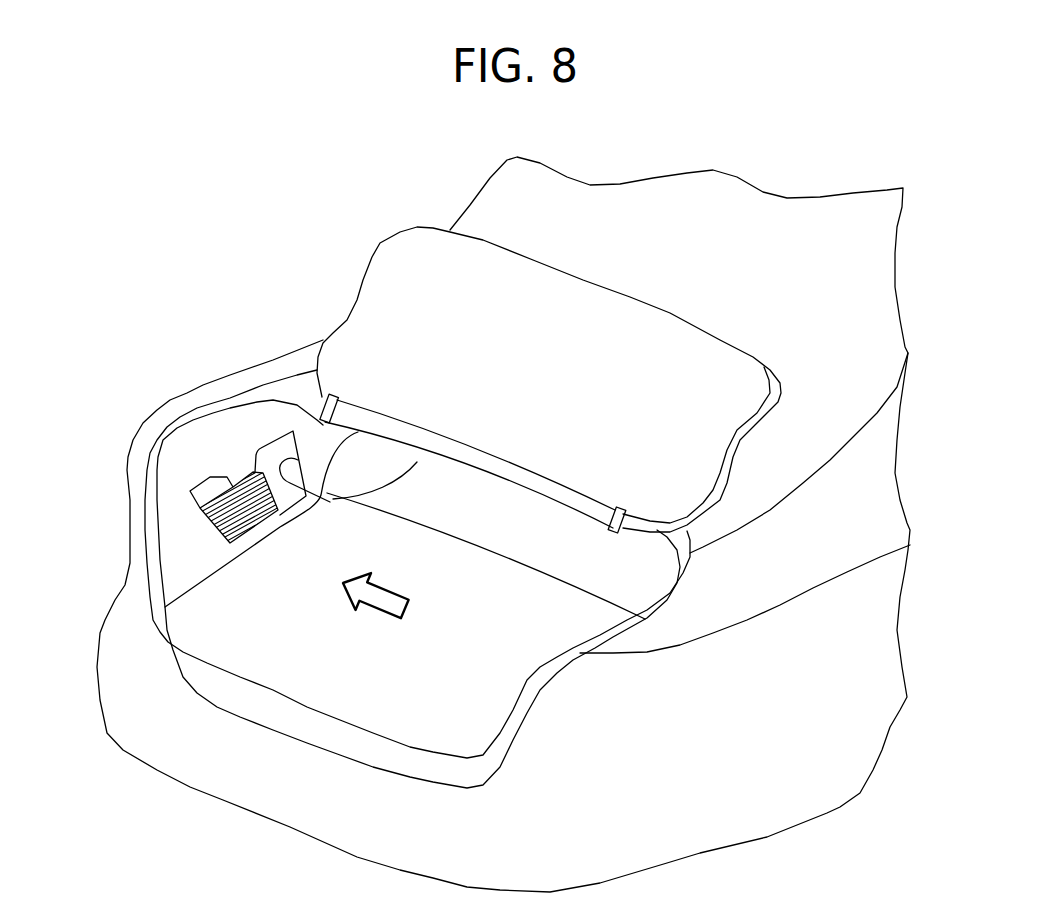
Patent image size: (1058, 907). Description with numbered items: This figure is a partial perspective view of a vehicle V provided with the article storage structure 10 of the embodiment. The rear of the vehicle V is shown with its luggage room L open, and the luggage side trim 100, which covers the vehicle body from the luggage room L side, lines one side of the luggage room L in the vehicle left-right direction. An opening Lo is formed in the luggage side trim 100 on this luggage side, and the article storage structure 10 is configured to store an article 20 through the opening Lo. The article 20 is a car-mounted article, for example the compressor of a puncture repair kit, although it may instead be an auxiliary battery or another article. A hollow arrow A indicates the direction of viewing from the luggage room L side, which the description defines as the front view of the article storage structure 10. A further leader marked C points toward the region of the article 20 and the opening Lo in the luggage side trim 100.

The article storage structure 10 is at (268, 513).
The article 20 is at (242, 527).
The luggage side trim 100 is at (197, 557).
The opening Lo is at (337, 500).
The cargo area C is at (187, 530).
The arrow A is at (380, 593).
The luggage room L is at (313, 647).
The vehicle V is at (817, 740).